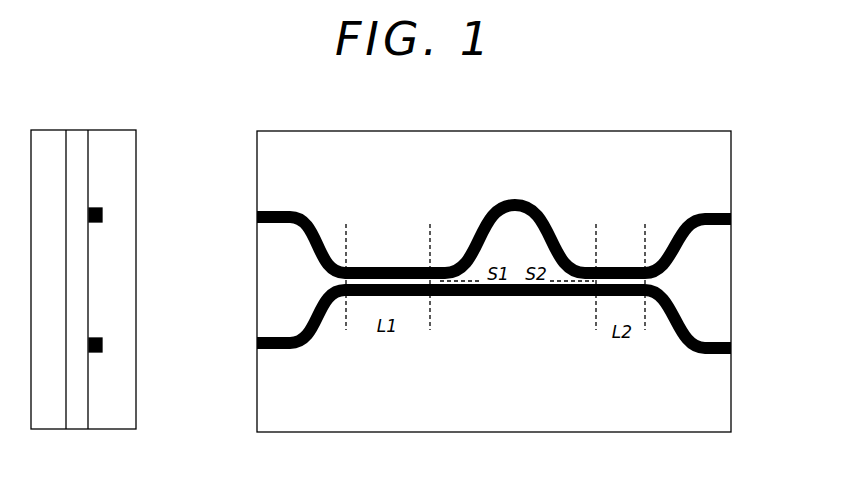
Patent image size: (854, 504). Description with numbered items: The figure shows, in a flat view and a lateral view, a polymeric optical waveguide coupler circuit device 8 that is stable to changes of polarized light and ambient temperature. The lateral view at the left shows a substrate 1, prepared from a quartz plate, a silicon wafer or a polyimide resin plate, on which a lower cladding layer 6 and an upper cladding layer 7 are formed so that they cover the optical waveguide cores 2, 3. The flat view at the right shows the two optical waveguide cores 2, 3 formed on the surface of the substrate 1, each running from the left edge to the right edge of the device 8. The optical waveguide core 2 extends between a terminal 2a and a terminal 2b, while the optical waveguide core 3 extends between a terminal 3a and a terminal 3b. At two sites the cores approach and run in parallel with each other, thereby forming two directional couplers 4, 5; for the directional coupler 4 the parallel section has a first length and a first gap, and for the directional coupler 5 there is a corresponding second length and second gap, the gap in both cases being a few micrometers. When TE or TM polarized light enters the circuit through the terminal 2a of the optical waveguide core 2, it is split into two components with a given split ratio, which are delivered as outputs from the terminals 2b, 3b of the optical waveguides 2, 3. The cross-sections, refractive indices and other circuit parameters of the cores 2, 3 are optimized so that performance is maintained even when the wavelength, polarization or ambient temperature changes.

The substrate 1 is at (45, 423).
The lower cladding layer 6 is at (73, 423).
The upper cladding layer 7 is at (112, 423).
The polymeric optical waveguide coupler circuit device 8 is at (508, 433).
The optical waveguide core 2 is at (521, 303).
The optical waveguide core 3 is at (515, 192).
The directional coupler 4 is at (389, 257).
The directional coupler 5 is at (619, 259).
The terminal 2a is at (101, 341).
The terminal 2b is at (732, 348).
The terminal 3a is at (101, 213).
The terminal 3b is at (732, 219).